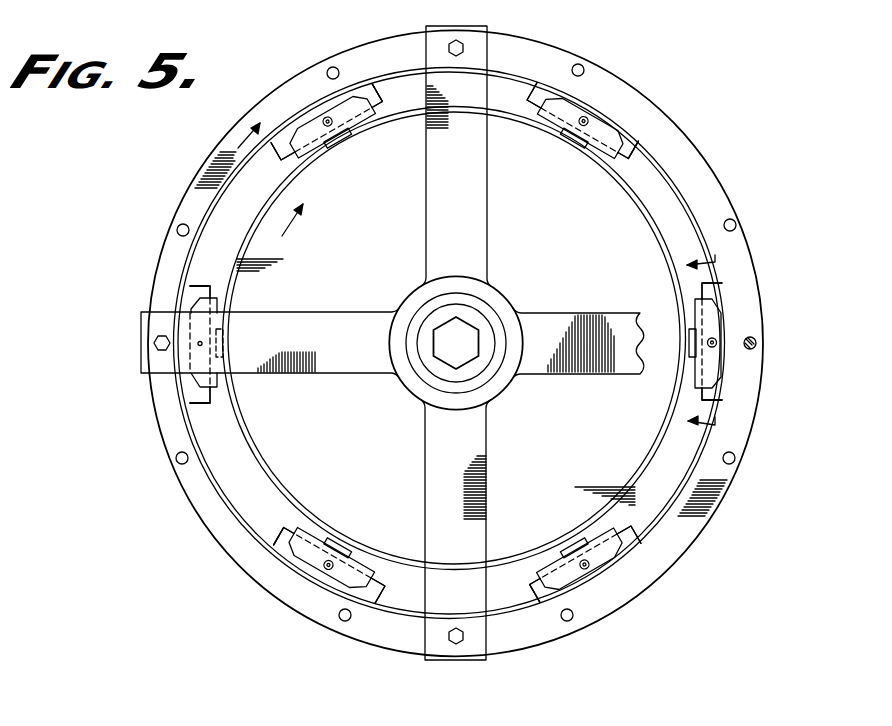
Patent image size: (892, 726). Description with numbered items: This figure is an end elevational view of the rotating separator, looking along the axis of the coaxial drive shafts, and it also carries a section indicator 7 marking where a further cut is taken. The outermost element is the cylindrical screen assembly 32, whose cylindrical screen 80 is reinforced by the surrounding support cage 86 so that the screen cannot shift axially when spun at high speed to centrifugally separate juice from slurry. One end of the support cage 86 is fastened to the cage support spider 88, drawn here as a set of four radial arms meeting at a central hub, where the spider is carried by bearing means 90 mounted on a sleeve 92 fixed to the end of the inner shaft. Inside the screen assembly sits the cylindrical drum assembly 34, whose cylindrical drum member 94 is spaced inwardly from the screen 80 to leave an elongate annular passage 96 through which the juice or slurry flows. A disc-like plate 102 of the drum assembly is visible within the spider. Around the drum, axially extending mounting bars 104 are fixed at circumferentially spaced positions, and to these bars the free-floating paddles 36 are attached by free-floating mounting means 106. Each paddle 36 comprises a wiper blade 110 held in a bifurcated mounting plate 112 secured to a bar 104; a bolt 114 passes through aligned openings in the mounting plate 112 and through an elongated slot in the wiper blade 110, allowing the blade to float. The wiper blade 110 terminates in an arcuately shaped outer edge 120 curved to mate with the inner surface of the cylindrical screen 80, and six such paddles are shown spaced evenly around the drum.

The section line 7- 7 is at (698, 342).
The cylindrical screen assembly 32 is at (752, 232).
The cylindrical drum assembly 34 is at (699, 185).
The free-floating paddles 36 is at (190, 288).
The cylindrical screen 80 is at (690, 150).
The support cage 86 is at (740, 192).
The cage support spider 88 is at (489, 257).
The bearing means 90 is at (420, 307).
The sleeve 92 is at (432, 300).
The cylindrical drum member 94 is at (240, 497).
The elongate annular passage 96 is at (212, 436).
The disc plate 102 is at (577, 438).
The mounting bars 104 is at (350, 145).
The free-floating mounting means 106 is at (642, 136).
The wiper blade 110 is at (545, 95).
The mounting plate 112 is at (352, 100).
The bolt 114 is at (328, 116).
The arcuately shaped outer edge 120 is at (322, 104).